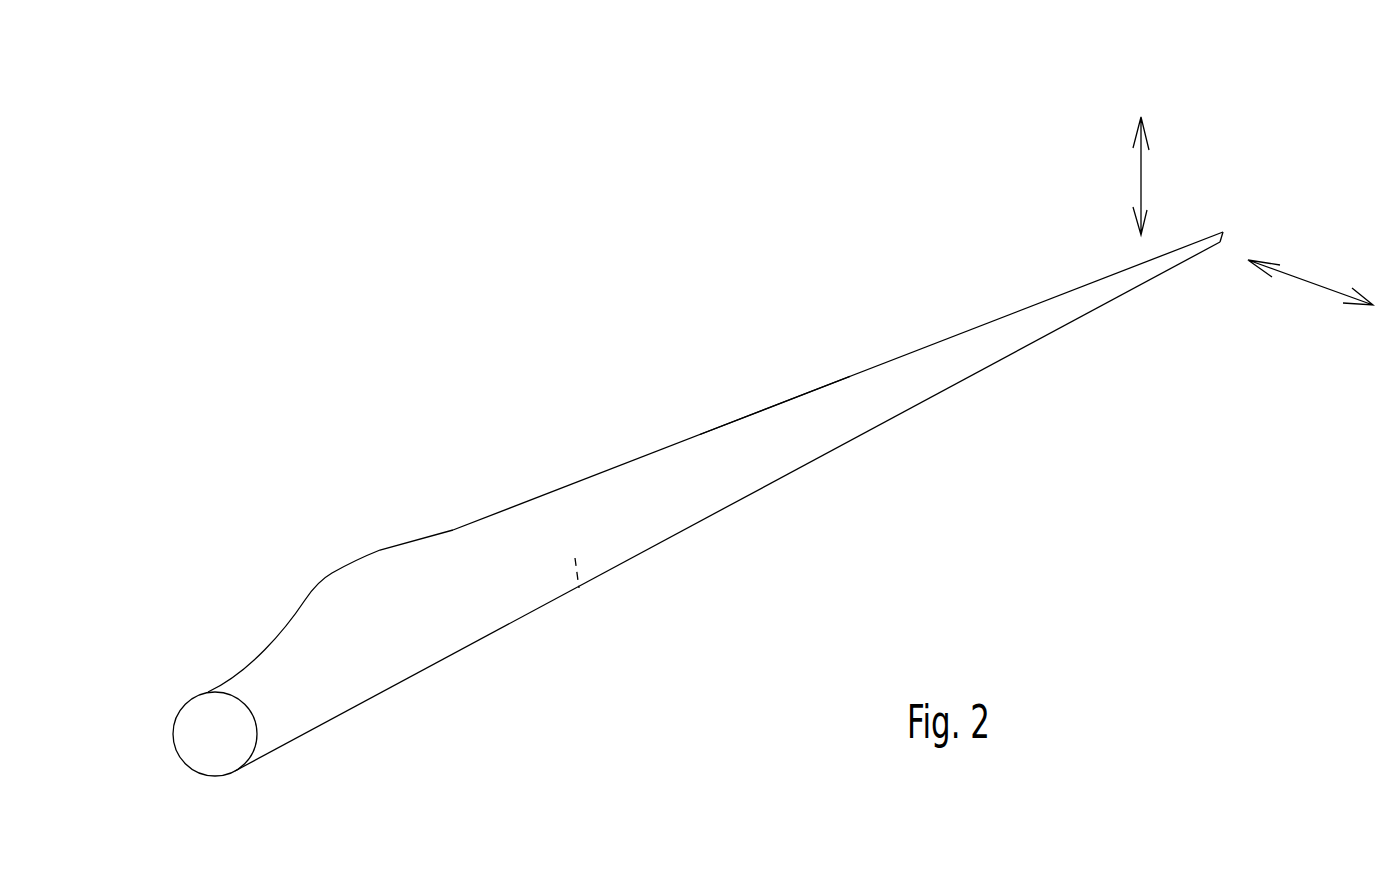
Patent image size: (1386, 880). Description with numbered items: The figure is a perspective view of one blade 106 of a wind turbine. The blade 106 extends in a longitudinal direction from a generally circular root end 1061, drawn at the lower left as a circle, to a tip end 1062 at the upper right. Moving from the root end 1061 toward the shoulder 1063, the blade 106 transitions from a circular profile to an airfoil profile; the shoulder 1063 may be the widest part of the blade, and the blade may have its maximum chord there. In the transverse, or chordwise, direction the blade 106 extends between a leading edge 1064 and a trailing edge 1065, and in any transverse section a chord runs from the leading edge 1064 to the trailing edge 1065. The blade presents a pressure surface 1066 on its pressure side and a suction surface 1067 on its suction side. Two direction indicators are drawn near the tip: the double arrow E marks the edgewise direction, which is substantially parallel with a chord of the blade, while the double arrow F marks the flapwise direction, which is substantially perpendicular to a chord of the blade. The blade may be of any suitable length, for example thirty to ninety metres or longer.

The blade 106 is at (462, 422).
The root end 1061 is at (178, 757).
The tip end 1062 is at (1223, 232).
The shoulder 1063 is at (330, 573).
The leading edge 1064 is at (670, 530).
The trailing edge 1065 is at (665, 445).
The pressure surface 1066 is at (579, 588).
The suction surface 1067 is at (747, 443).
The double arrow F (flapwise direction) F is at (1140, 181).
The double arrow E (edgewise direction) E is at (1313, 285).